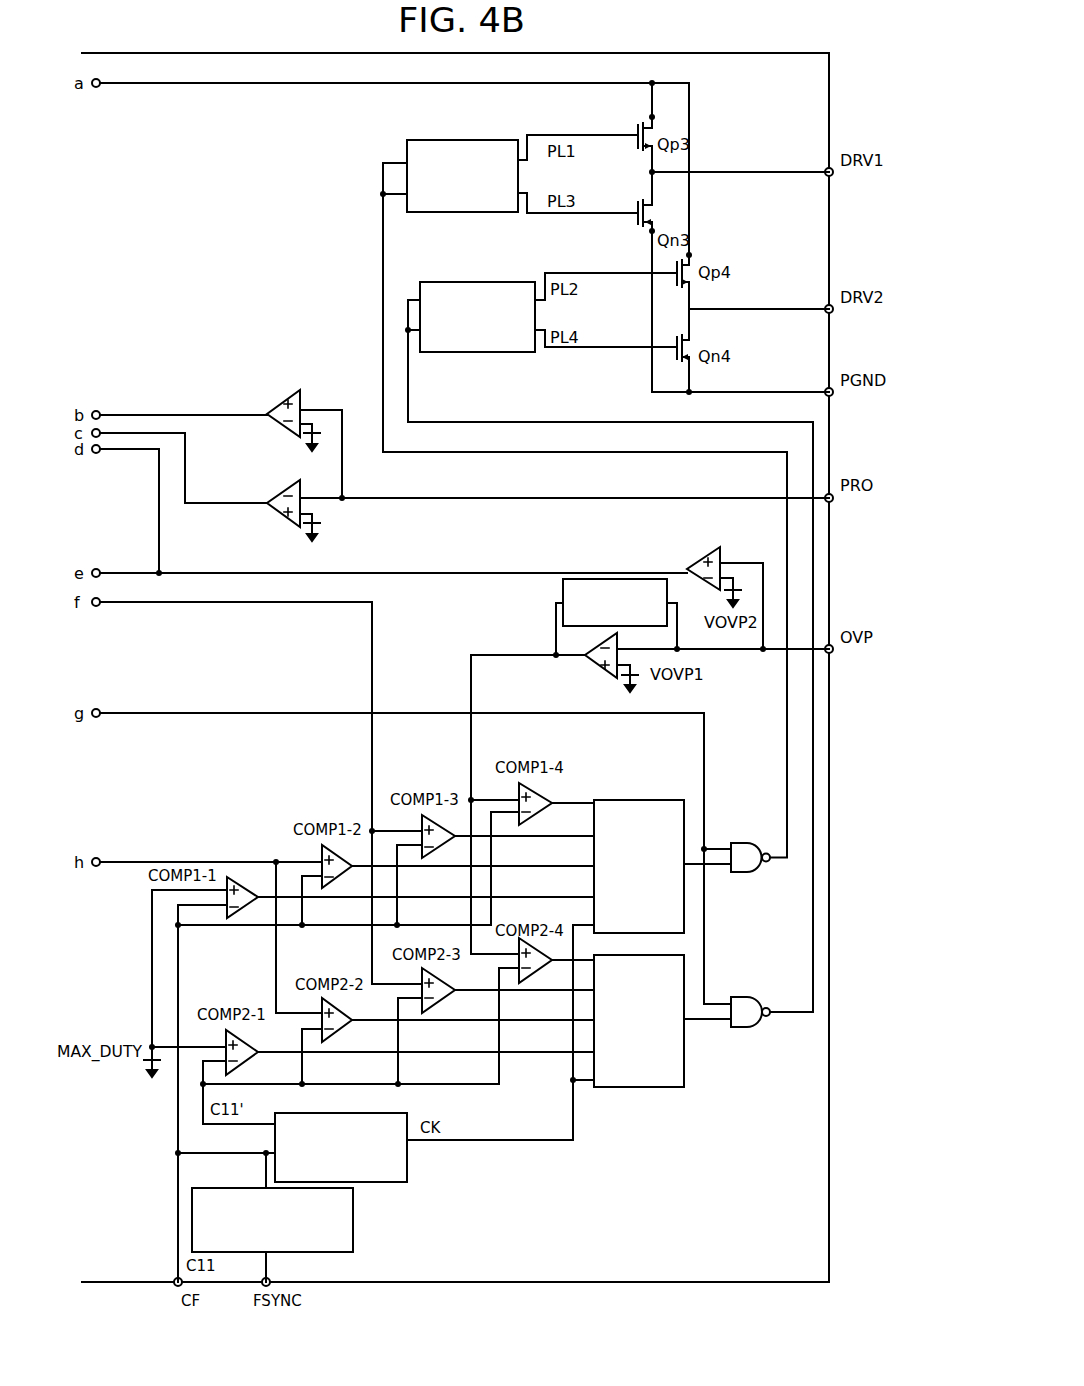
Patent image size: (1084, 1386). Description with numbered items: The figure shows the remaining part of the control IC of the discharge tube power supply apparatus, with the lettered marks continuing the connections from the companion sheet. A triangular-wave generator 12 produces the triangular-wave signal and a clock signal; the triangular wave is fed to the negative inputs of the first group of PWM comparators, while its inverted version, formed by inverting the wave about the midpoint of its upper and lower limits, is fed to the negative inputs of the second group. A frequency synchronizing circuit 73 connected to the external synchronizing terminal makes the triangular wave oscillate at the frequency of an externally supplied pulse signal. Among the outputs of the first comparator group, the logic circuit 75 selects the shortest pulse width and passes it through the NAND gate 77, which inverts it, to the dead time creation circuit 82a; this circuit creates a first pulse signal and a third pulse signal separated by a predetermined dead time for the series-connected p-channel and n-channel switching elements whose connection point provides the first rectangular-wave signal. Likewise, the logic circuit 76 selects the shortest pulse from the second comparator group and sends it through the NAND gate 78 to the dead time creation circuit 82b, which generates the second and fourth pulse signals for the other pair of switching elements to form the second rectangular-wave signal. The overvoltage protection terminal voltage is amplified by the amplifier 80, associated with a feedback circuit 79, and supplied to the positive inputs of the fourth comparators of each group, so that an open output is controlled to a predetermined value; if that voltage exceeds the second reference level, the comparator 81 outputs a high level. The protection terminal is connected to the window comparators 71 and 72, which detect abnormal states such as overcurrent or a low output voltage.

The triangular-wave generator 12 is at (409, 1166).
The window comparator 71 is at (279, 405).
The window comparator 72 is at (279, 495).
The frequency synchronizing circuit 73 is at (353, 1222).
The logic circuit 75 is at (639, 800).
The logic circuit 76 is at (641, 1088).
The NAND gate 77 is at (743, 843).
The NAND gate 78 is at (740, 997).
The feedback circuit 79 is at (563, 600).
The amplifier 80 is at (602, 672).
The comparator 81 is at (700, 556).
The dead time creation circuit 82a is at (476, 140).
The dead time creation circuit 82b is at (468, 280).